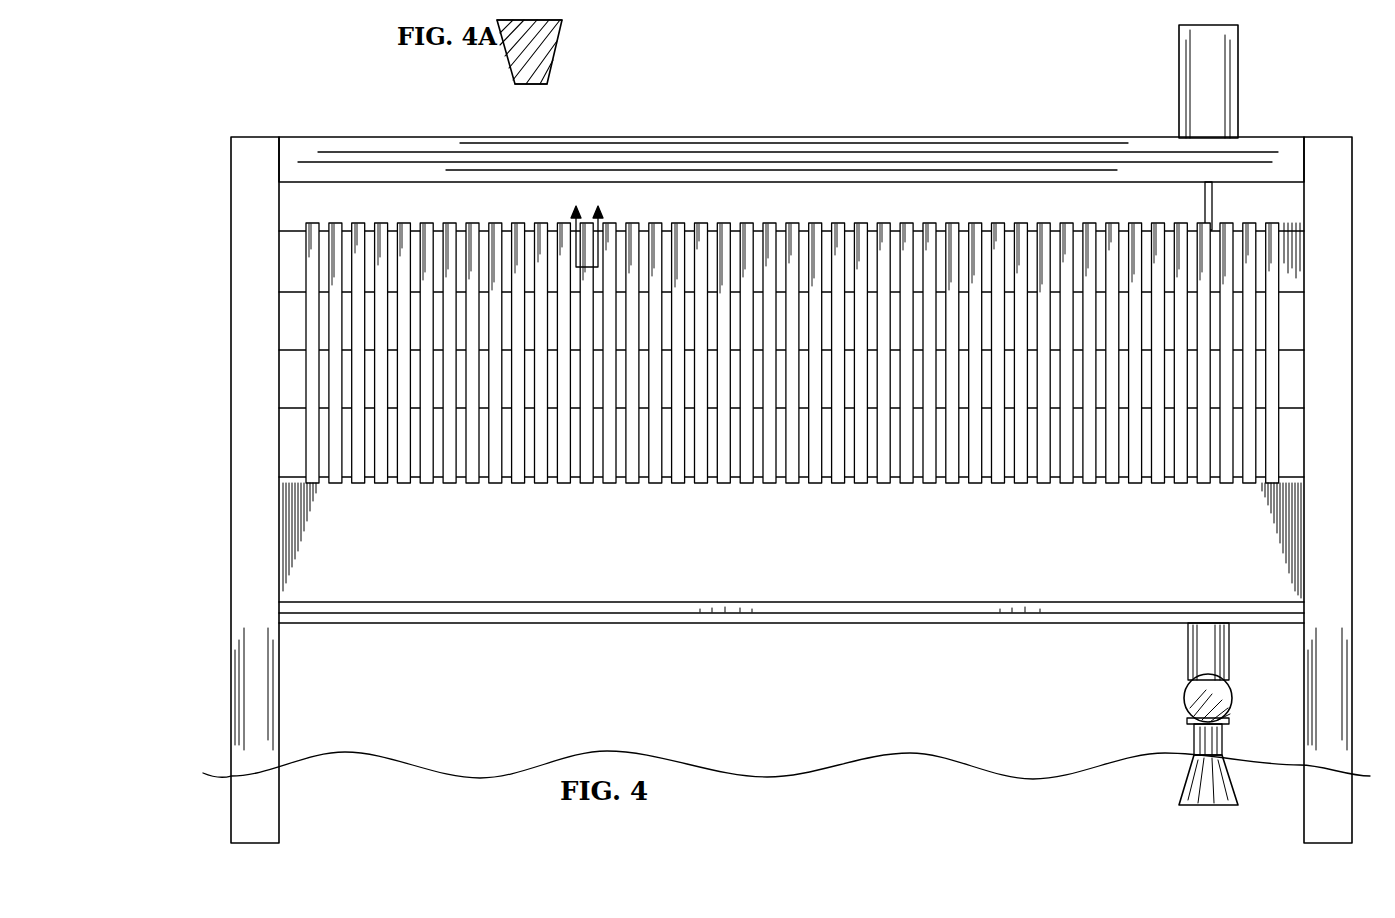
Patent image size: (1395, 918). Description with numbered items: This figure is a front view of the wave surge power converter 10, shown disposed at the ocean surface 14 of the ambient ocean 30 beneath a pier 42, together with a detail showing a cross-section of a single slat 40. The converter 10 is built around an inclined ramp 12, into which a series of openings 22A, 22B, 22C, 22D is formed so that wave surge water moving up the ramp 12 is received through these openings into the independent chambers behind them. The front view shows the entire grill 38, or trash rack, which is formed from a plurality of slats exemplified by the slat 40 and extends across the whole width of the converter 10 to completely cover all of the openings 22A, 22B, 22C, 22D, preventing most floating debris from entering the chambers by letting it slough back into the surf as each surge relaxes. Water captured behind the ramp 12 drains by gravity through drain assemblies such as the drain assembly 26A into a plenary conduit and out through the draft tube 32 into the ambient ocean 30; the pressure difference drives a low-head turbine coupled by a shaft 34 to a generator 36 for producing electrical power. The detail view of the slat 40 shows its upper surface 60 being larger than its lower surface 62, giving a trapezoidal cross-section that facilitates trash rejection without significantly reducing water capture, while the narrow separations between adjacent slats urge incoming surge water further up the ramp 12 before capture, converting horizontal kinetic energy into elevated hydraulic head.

In FIG. 4, the wave surge power converter 10 is at (748, 79).
In FIG. 4, the inclined ramp 12 is at (637, 590).
In FIG. 4, the ocean surface 14 is at (1088, 775).
In FIG. 4, the opening 22A is at (301, 418).
In FIG. 4, the opening 22B is at (301, 360).
In FIG. 4, the opening 22C is at (301, 303).
In FIG. 4, the opening 22D is at (301, 245).
In FIG. 4, the drain assembly 26A is at (1188, 645).
In FIG. 4, the ambient ocean 30 is at (1046, 821).
In FIG. 4, the draft tube 32 is at (1208, 806).
In FIG. 4, the shaft 34 is at (1213, 216).
In FIG. 4, the generator 36 is at (1180, 75).
In FIG. 4, the grill 38 is at (571, 402).
In FIG. 4A, the slat 40 is at (515, 76).
In FIG. 4, the slat 40 is at (818, 478).
In FIG. 4, the pier 42 is at (932, 136).
In FIG. 4A, the upper surface 60 is at (553, 17).
In FIG. 4A, the lower surface 62 is at (532, 86).